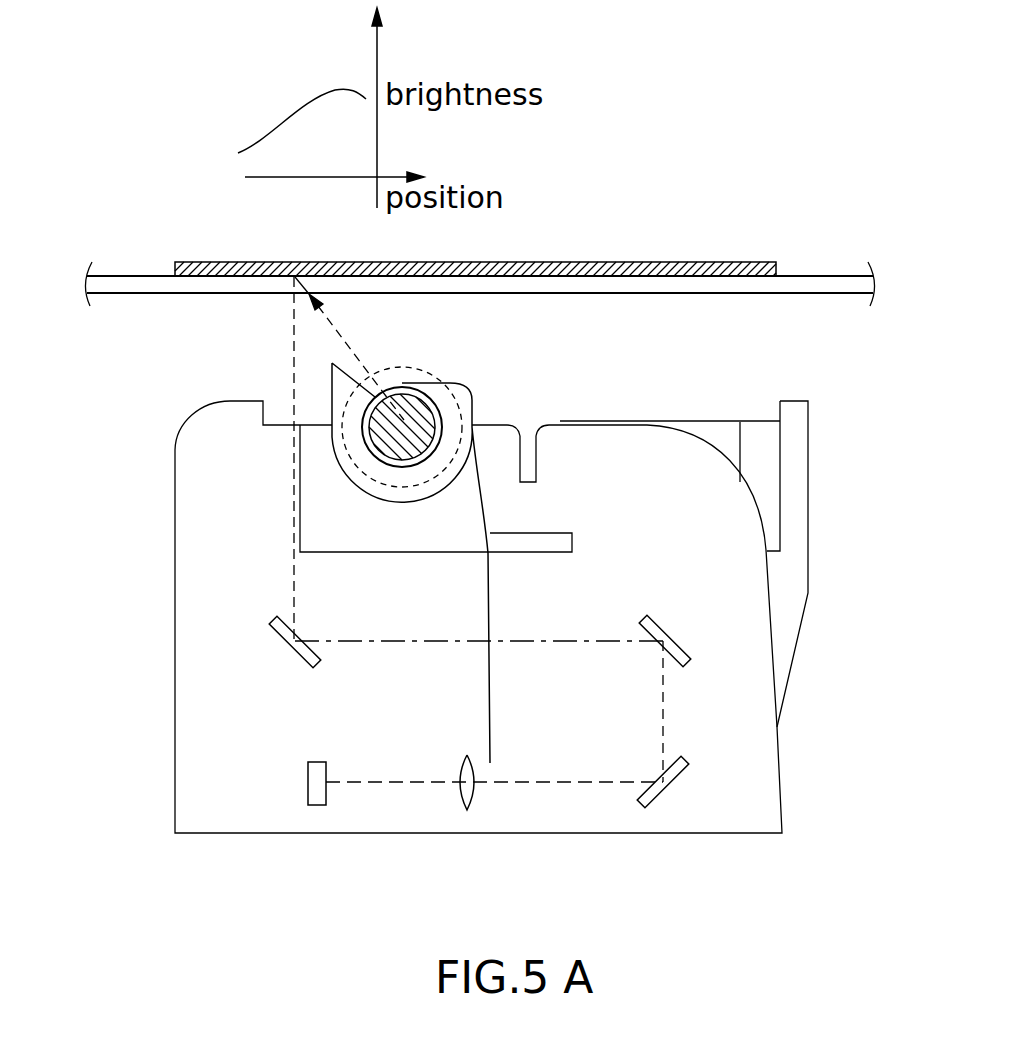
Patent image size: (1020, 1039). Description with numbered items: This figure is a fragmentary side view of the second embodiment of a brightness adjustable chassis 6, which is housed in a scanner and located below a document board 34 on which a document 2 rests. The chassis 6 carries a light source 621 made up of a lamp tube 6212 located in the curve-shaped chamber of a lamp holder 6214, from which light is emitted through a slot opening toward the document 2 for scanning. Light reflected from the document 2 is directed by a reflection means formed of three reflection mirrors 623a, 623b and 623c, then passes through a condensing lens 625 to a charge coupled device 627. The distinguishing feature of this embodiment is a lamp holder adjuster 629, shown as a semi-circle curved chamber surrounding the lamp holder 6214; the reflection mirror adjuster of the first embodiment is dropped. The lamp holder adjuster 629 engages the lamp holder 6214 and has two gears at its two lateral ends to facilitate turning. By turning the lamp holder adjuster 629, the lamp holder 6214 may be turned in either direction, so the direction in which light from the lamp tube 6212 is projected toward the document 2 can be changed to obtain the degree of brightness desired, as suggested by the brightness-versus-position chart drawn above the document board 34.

The document 2 is at (616, 242).
The document board 34 is at (808, 284).
The chassis 6 is at (830, 492).
The light source 621 is at (463, 530).
The lamp tube 6212 is at (405, 405).
The lamp holder 6214 is at (450, 383).
The lamp holder adjuster 629 is at (372, 488).
The first reflection mirror 623a is at (275, 620).
The second reflection mirror 623b is at (690, 655).
The third reflection mirror 623c is at (656, 796).
The condensing lens 625 is at (465, 803).
The charge coupled device 627 is at (318, 806).